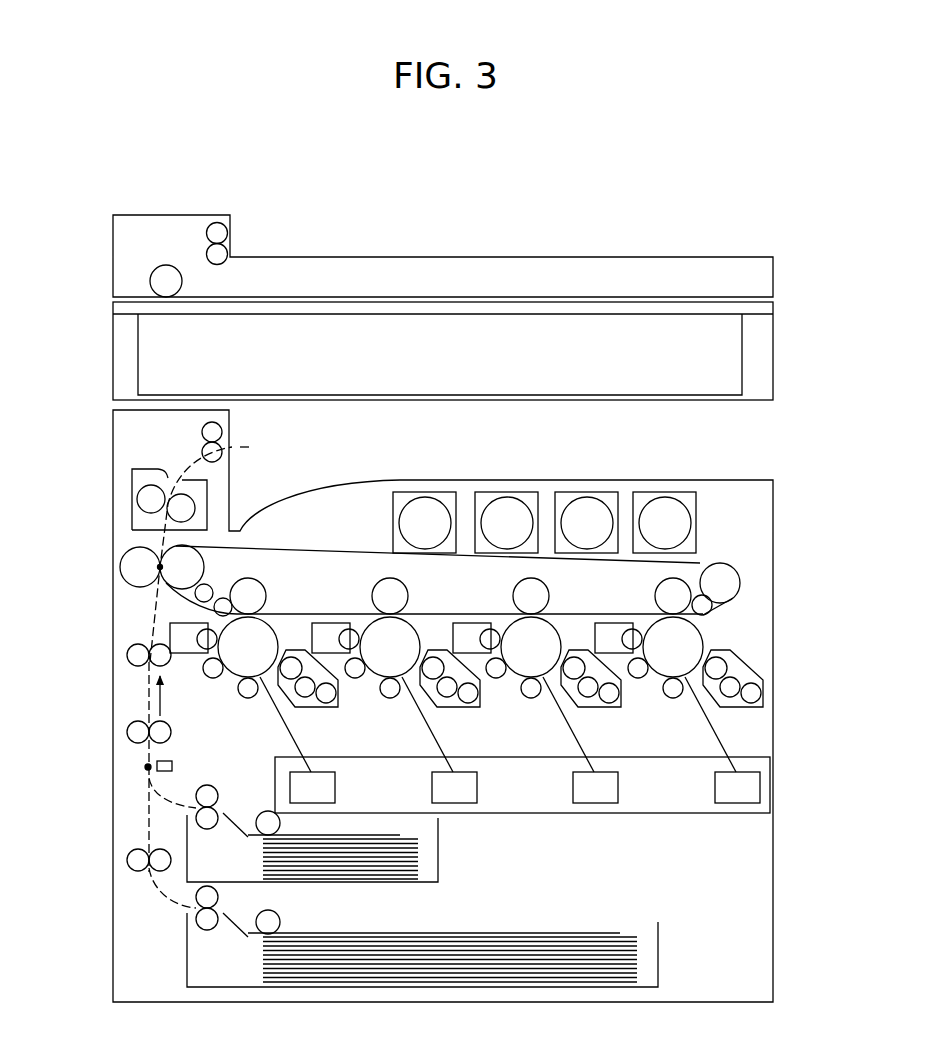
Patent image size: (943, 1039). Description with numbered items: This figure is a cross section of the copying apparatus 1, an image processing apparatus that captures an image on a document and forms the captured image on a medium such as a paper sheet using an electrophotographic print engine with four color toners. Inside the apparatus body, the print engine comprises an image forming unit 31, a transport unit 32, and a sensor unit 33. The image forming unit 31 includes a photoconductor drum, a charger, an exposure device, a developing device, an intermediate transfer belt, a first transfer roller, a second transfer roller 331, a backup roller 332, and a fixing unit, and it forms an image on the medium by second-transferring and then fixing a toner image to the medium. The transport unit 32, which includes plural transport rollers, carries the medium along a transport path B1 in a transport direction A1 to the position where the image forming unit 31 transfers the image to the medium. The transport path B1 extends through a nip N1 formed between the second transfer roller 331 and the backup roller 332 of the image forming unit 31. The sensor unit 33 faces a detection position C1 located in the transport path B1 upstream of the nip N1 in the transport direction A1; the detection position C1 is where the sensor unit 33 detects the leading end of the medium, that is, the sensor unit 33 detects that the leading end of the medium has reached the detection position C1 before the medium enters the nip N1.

The copying apparatus 1 is at (567, 232).
The image forming unit 31 is at (716, 542).
The transport unit 32 is at (135, 820).
The sensor unit 33 is at (173, 766).
The second transfer roller 331 is at (192, 566).
The backup roller 332 is at (144, 563).
The nip N1 is at (158, 570).
The transport direction A1 is at (179, 696).
The transport path B1 is at (146, 699).
The detection position C1 is at (146, 767).